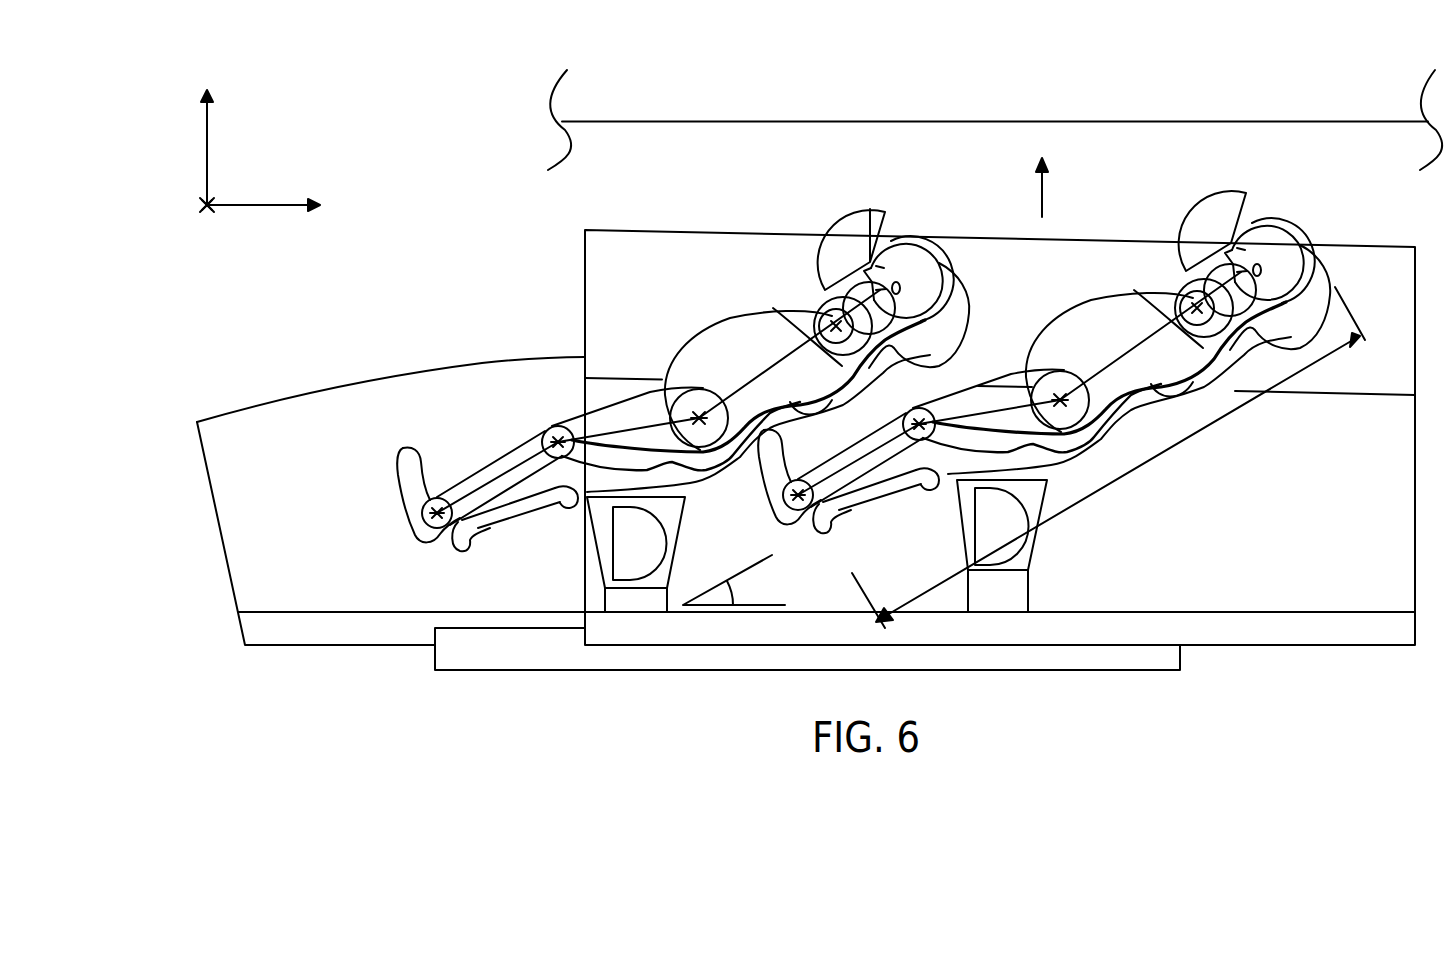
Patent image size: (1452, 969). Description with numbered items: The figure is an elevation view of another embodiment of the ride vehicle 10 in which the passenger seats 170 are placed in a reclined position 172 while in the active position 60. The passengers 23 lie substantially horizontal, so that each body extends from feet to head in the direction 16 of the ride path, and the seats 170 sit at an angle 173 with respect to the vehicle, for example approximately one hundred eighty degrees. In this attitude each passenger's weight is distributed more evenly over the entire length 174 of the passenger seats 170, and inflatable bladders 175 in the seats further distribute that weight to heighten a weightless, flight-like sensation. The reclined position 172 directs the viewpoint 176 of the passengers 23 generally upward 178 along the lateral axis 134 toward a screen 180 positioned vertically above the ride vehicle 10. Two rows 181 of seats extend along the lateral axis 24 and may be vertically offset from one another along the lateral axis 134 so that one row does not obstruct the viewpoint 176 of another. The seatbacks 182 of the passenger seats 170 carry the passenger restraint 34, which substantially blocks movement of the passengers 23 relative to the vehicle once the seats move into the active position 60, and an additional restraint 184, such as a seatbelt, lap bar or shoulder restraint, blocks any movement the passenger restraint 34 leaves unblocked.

The ride vehicle 10 is at (377, 328).
The lateral axis 134 is at (207, 152).
The direction 16 is at (258, 206).
The lateral axis 24 is at (207, 212).
The screen 180 is at (992, 125).
The rows 181 is at (630, 306).
The upward 178 is at (1040, 200).
The passenger seats 170 is at (686, 490).
The angle 173 is at (742, 588).
The entire length 174 is at (1142, 488).
The active position 60 is at (994, 355).
The reclined position 172 is at (995, 311).
The seatbacks 182 is at (855, 405).
The additional restraint 184 is at (837, 360).
The passenger restraint 34 is at (937, 357).
The viewpoint 176 is at (878, 222).
The passengers 23 is at (709, 352).
The inflatable bladders 175 is at (787, 397).